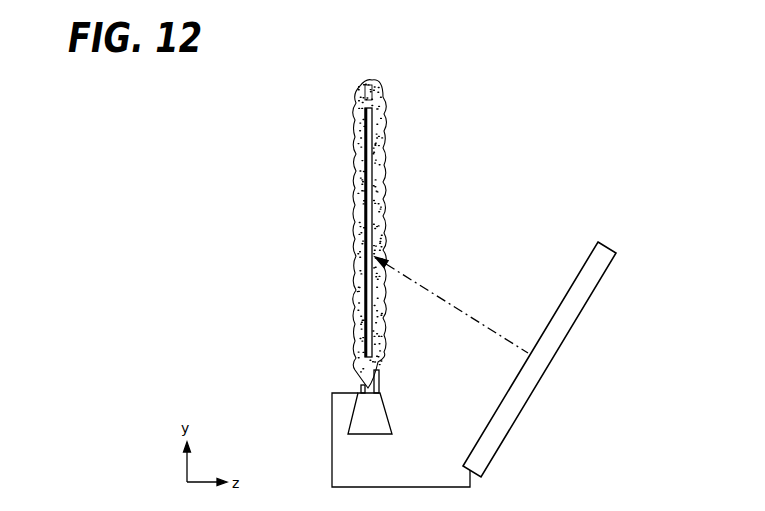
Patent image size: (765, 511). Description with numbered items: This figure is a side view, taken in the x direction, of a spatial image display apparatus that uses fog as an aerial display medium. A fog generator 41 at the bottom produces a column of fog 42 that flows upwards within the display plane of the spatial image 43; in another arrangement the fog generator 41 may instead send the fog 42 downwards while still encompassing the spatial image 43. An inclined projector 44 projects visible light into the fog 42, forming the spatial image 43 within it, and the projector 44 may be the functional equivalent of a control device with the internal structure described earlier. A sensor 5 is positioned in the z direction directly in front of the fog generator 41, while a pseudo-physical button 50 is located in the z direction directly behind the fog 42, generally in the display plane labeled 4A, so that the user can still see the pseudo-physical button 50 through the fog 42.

The fog 42 is at (366, 82).
The plasma flame / jet 4A is at (362, 94).
The spatial image 43 is at (372, 158).
The projector 44 is at (606, 244).
The fog generator 41 is at (390, 412).
The sensor 5 is at (361, 388).
The pseudo-physical button 50 is at (380, 374).